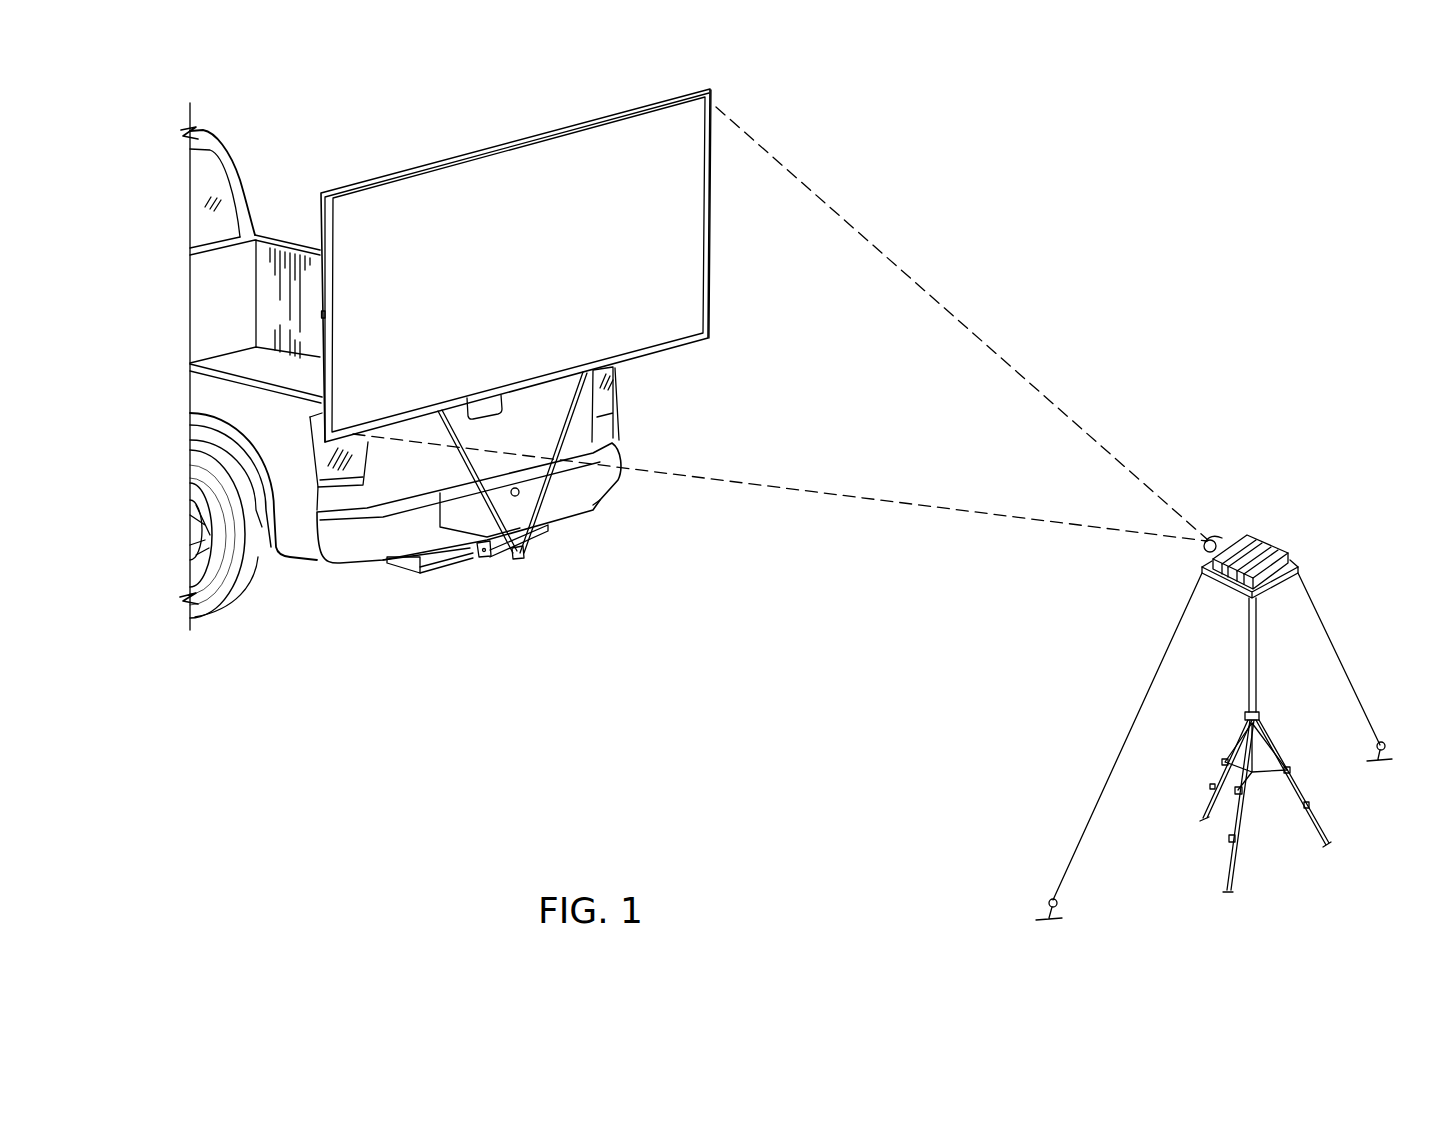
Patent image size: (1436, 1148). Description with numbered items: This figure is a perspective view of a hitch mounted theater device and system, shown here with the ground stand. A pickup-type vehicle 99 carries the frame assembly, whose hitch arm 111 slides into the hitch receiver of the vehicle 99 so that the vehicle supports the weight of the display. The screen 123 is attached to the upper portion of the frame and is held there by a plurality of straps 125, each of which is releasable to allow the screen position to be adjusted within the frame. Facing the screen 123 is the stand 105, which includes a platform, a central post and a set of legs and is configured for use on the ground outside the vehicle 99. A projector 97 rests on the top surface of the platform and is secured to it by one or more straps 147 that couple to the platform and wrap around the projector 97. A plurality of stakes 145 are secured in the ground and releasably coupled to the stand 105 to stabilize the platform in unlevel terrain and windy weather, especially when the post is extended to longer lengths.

The vehicle 99 is at (289, 619).
The hitch arm 111 is at (480, 558).
The screen 123 is at (531, 296).
The straps 147 is at (1257, 542).
The projector 97 is at (1212, 548).
The straps 125 is at (1277, 592).
The stand 105 is at (1282, 838).
The stakes 145 is at (1047, 902).